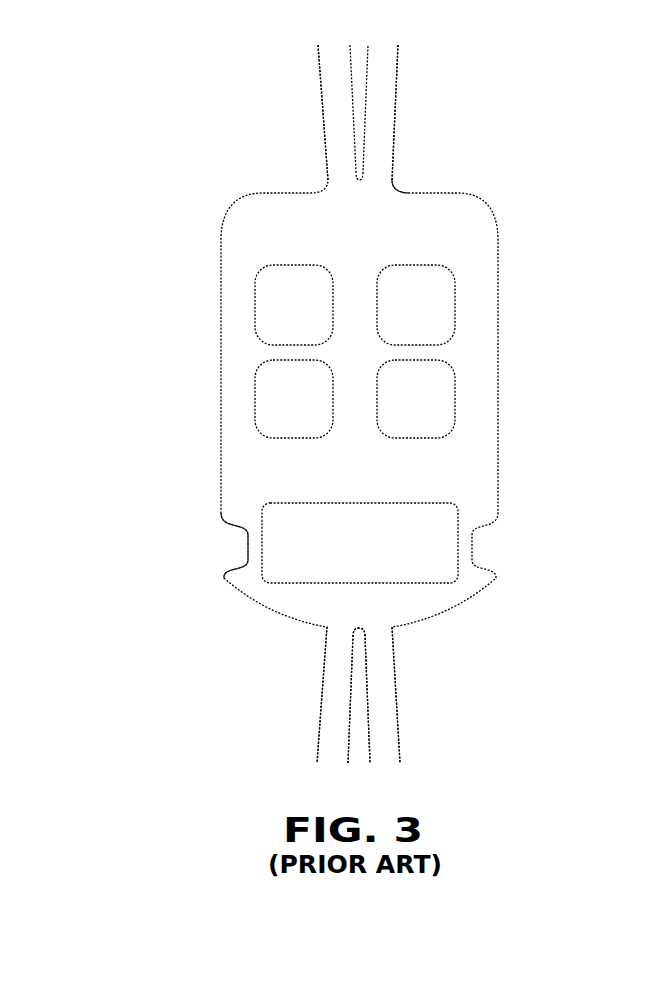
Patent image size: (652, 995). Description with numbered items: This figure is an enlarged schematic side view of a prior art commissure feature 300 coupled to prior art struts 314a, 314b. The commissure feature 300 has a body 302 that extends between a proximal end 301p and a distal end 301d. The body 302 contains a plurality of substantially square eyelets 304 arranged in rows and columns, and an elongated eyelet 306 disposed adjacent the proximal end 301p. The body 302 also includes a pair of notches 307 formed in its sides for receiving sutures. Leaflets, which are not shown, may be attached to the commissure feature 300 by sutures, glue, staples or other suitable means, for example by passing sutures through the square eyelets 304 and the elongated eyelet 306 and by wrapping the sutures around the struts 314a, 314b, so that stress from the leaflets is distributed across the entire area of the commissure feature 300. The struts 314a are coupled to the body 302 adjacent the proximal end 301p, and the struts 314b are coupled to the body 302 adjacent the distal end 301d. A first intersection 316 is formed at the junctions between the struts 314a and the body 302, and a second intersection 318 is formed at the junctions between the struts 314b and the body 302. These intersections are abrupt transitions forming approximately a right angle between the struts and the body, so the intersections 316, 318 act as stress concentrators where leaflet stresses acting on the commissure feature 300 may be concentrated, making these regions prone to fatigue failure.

The commissure feature 300 is at (507, 328).
The distal end 301d is at (302, 175).
The proximal end 301p is at (497, 632).
The body 302 is at (467, 447).
The substantially square eyelets 304 is at (437, 277).
The elongated eyelet 306 is at (427, 520).
The notches 307 is at (247, 553).
The struts 314a is at (382, 697).
The struts 314b is at (390, 62).
The first intersection 316 is at (393, 632).
The second intersection 318 is at (393, 178).